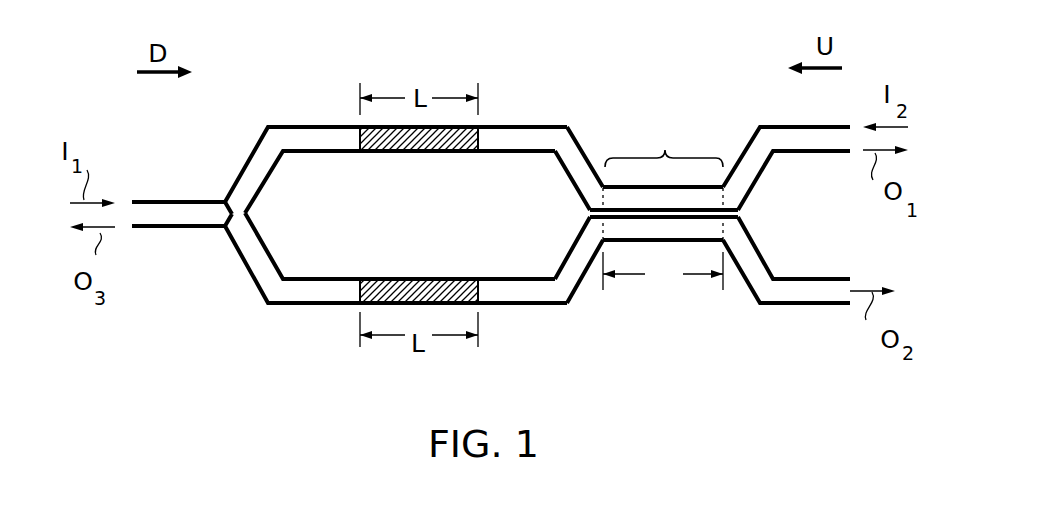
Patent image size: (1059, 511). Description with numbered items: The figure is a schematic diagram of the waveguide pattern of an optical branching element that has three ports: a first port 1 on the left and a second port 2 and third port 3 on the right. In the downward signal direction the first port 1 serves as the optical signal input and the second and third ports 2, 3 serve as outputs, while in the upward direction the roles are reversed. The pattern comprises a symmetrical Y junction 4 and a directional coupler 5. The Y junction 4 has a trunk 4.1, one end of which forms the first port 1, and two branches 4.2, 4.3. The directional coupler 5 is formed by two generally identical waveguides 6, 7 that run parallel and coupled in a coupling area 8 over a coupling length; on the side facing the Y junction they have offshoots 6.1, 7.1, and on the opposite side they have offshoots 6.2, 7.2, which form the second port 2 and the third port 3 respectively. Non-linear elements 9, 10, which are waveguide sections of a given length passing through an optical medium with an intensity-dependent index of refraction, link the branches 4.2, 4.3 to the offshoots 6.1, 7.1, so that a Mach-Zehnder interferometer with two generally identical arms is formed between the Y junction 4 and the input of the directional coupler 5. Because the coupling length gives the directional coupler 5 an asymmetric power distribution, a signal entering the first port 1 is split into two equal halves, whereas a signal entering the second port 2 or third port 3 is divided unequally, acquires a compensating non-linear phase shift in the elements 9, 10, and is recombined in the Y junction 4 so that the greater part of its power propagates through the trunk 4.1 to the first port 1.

The first port 1 is at (142, 220).
The second port 2 is at (848, 138).
The third port 3 is at (845, 300).
The Y junction 4 is at (228, 206).
The trunk 4.1 is at (180, 230).
The branch 4.2 is at (259, 162).
The branch 4.3 is at (250, 252).
The directional coupler 5 is at (671, 206).
The waveguide 6 is at (645, 200).
The offshoot 6.1 is at (563, 132).
The offshoot 6.2 is at (773, 135).
The waveguide 7 is at (677, 225).
The offshoot 7.1 is at (563, 293).
The offshoot 7.2 is at (768, 292).
The coupling area 8 is at (663, 178).
The non-linear element 9 is at (428, 153).
The non-linear element 10 is at (424, 278).